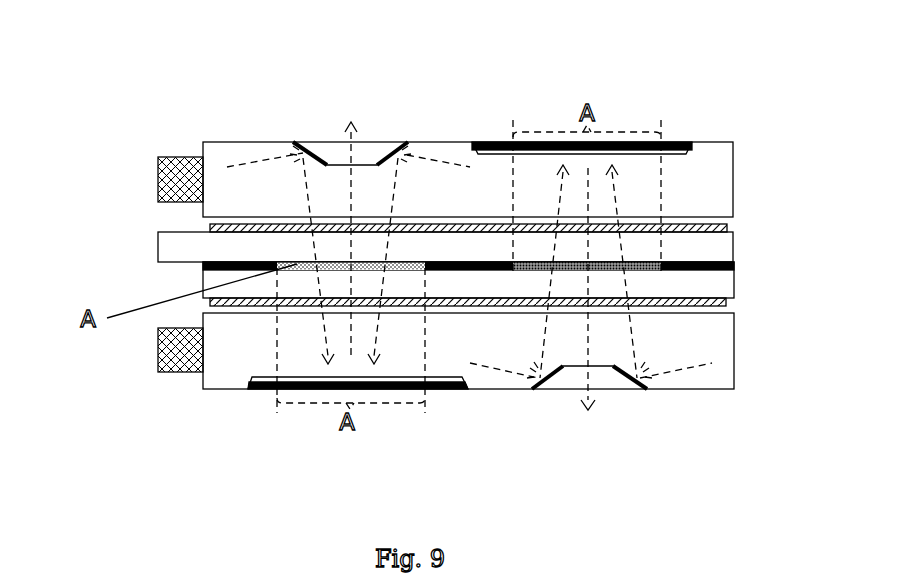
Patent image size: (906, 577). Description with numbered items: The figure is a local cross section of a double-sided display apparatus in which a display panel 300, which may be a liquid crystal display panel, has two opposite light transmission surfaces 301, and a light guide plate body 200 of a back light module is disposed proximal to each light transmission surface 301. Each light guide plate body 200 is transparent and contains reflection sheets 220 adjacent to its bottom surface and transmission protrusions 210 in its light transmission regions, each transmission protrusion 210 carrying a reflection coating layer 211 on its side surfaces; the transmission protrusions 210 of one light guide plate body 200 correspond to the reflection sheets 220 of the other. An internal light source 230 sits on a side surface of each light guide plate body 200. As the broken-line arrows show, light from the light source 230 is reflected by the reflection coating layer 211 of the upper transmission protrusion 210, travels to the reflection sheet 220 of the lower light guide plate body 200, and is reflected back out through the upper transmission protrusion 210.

The light guide plate body 200 is at (707, 188).
The transmission protrusion 210 is at (365, 152).
The reflection coating layer 211 is at (313, 155).
The reflection sheet 220 is at (303, 376).
The light source 230 is at (175, 177).
The display panel 300 is at (173, 247).
The light transmission surface 301 is at (295, 224).